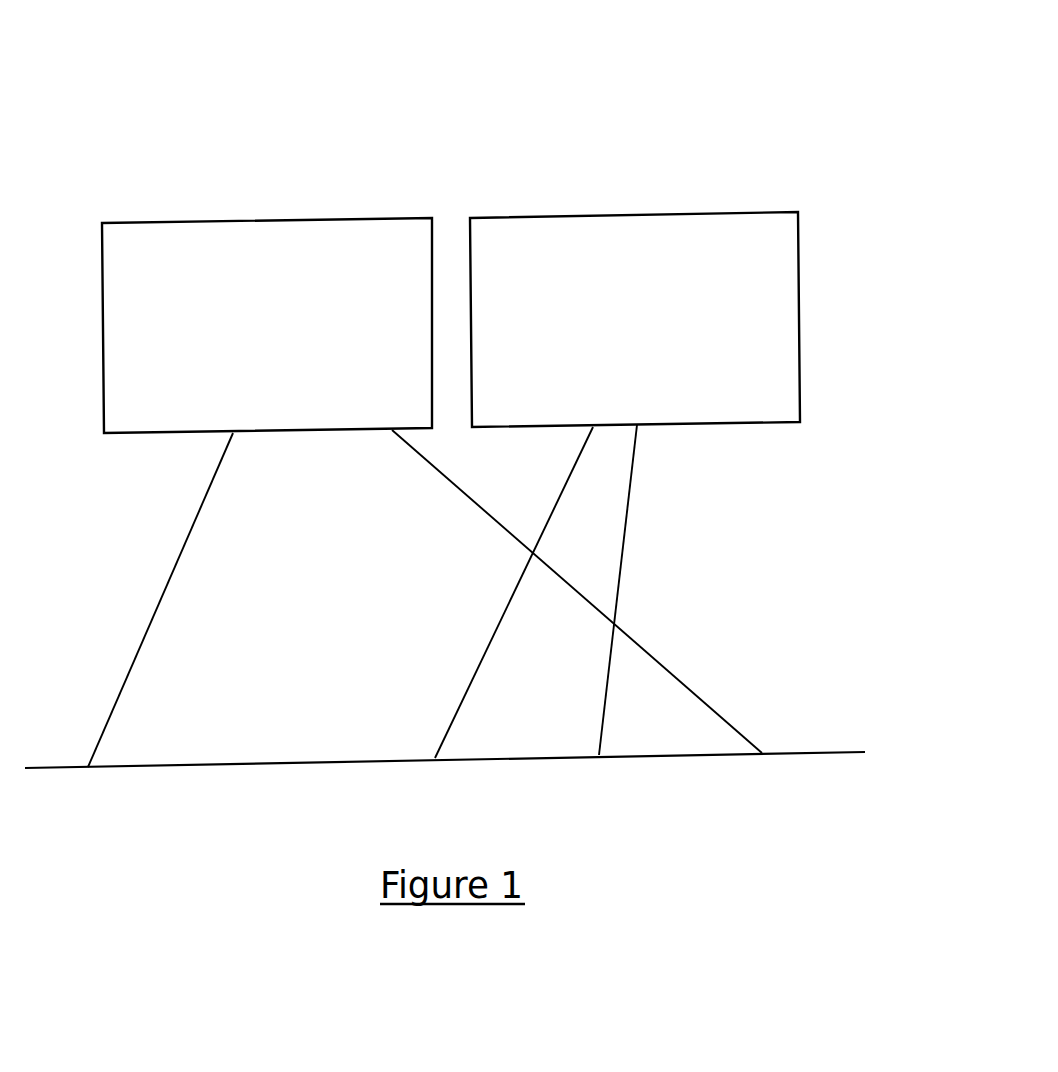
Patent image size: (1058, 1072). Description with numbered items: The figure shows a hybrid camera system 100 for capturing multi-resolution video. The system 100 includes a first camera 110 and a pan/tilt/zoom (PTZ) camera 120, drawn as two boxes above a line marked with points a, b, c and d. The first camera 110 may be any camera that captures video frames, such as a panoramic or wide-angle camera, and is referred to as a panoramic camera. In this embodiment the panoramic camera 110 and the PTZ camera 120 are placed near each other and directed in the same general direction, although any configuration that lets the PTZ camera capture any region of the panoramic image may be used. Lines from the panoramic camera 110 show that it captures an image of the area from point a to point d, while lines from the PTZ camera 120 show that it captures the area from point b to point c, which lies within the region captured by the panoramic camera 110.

The hybrid camera system 100 is at (676, 37).
The first camera 110 is at (292, 338).
The pan/tilt/zoom (PTZ) camera 120 is at (611, 333).